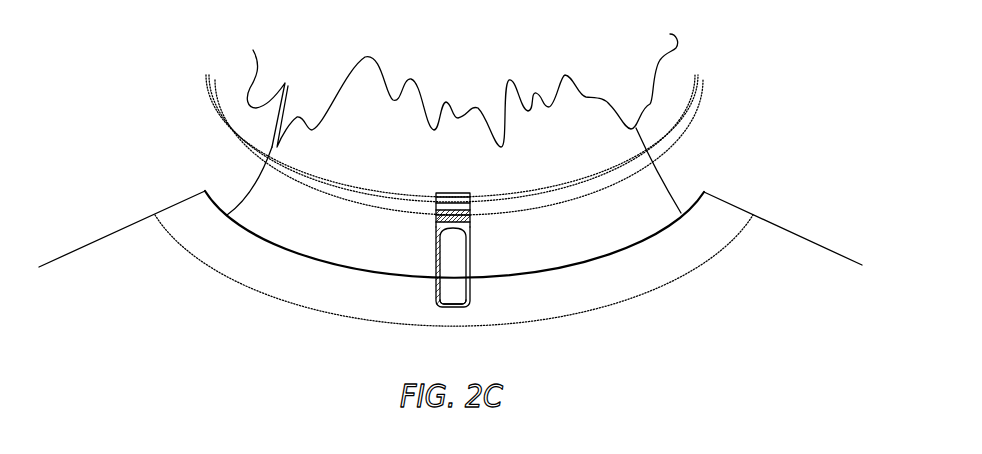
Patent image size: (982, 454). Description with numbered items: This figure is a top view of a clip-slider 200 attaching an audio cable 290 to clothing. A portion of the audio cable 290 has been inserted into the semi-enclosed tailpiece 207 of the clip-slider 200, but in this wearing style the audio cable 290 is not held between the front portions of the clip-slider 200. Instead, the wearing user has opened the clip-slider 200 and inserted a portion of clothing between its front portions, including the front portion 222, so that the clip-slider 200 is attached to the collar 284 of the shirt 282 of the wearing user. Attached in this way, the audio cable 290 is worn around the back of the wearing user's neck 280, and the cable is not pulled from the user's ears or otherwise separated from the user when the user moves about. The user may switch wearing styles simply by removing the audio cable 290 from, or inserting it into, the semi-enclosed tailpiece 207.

The clip-slider 200 is at (461, 238).
The semi-enclosed tailpiece 207 is at (463, 193).
The front portion 222 is at (443, 299).
The neck 280 is at (328, 155).
The shirt 282 is at (450, 258).
The collar 284 is at (425, 262).
The audio cable 290 is at (219, 110).